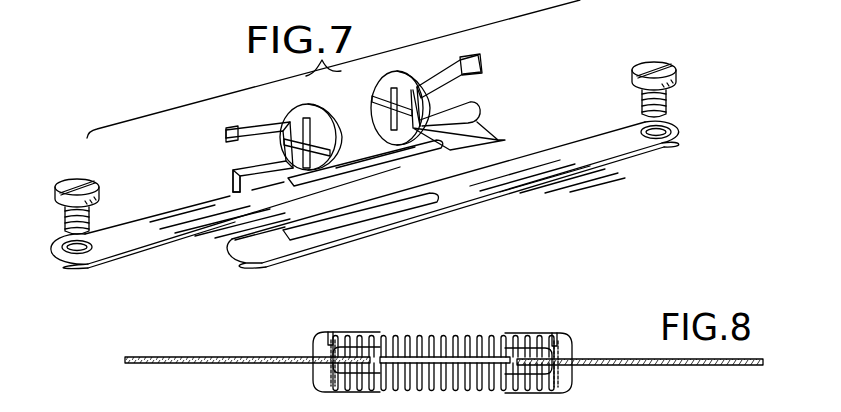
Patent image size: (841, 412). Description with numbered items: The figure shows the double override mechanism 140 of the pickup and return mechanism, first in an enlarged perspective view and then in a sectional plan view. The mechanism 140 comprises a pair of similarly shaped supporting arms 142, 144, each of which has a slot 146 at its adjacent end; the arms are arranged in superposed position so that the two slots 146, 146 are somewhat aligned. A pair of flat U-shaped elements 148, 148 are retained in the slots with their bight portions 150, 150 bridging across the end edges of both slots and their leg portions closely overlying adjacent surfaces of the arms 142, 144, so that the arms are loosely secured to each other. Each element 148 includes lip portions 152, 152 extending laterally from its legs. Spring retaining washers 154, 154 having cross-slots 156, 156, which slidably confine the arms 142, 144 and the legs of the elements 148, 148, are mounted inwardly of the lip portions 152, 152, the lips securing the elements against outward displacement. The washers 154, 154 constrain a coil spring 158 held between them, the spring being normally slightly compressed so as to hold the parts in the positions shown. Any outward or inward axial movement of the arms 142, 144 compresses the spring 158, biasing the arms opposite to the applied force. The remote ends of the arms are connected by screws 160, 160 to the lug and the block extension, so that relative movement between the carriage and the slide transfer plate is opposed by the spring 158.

In FIG. 8, the double override mechanism 140 is at (505, 312).
In FIG. 7, the supporting arm 142 is at (146, 232).
In FIG. 8, the supporting arm 142 is at (158, 364).
In FIG. 7, the supporting arm 144 is at (549, 160).
In FIG. 8, the supporting arm 144 is at (655, 366).
In FIG. 7, the slot 146 is at (424, 152).
In FIG. 7, the flat U-shaped element 148 is at (258, 128).
In FIG. 8, the flat U-shaped element 148 is at (347, 345).
In FIG. 7, the bight portion 150 is at (245, 166).
In FIG. 7, the lip portion 152 is at (233, 131).
In FIG. 7, the spring retaining washer 154 is at (296, 112).
In FIG. 7, the cross-slot 156 is at (384, 124).
In FIG. 8, the coil spring 158 is at (418, 330).
In FIG. 7, the screw 160 is at (70, 186).